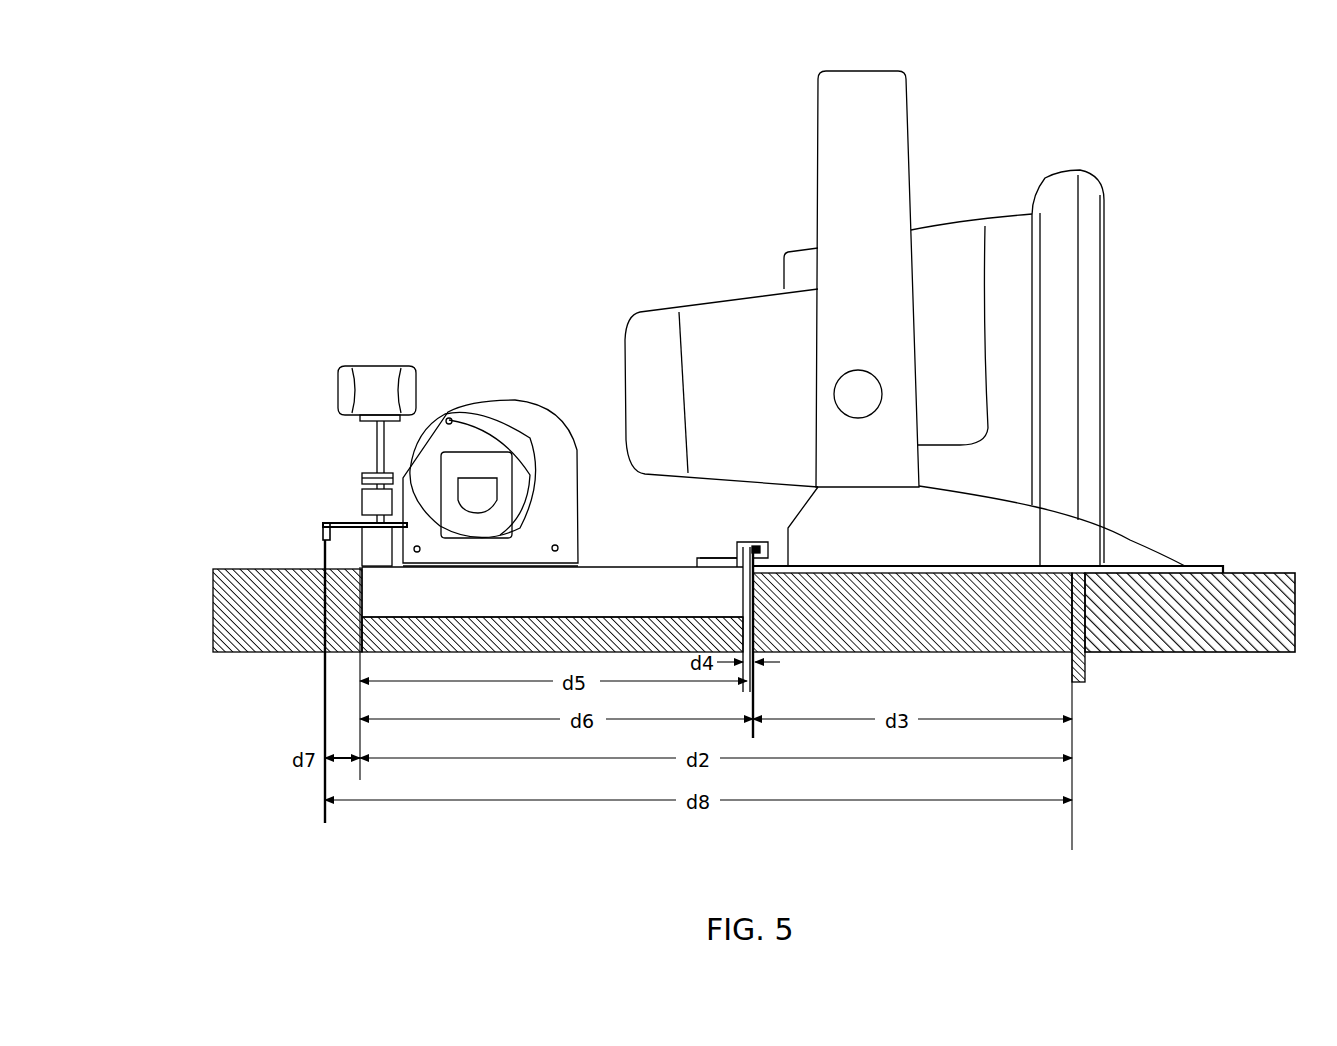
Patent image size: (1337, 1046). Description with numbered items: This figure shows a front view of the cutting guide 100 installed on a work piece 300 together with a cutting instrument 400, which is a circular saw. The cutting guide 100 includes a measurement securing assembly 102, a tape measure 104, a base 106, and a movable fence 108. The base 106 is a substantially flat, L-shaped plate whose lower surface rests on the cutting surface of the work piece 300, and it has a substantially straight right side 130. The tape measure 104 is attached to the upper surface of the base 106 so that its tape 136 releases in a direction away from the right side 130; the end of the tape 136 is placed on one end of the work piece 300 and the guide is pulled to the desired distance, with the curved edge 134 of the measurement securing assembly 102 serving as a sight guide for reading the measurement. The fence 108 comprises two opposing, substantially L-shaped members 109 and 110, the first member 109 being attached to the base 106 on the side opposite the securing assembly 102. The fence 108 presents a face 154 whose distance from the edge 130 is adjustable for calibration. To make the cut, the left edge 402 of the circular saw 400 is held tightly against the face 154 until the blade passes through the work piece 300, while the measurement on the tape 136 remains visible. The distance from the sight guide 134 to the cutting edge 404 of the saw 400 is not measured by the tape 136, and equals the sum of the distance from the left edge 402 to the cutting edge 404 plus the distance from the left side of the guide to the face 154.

The cutting guide 100 is at (507, 250).
The measurement securing assembly 102 is at (375, 338).
The tape measure 104 is at (497, 372).
The base 106 is at (597, 537).
The movable fence 108 is at (708, 530).
The first member 109 is at (720, 556).
The second member 110 is at (755, 537).
The right side 130 is at (743, 592).
The curved edge 134 is at (360, 514).
The tape 136 is at (325, 538).
The face 154 is at (760, 550).
The work piece 300 is at (237, 568).
The cutting instrument 400 is at (740, 200).
The left edge 402 is at (760, 568).
The cutting edge 404 is at (1072, 668).